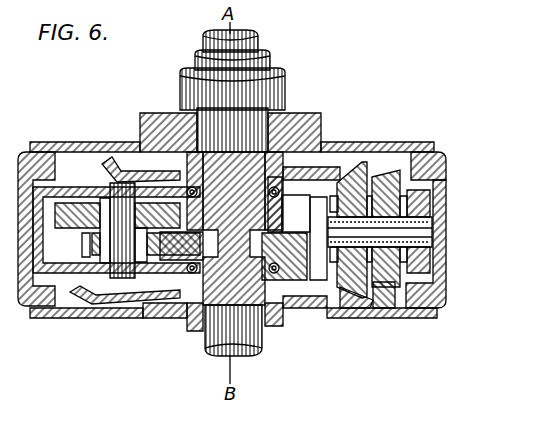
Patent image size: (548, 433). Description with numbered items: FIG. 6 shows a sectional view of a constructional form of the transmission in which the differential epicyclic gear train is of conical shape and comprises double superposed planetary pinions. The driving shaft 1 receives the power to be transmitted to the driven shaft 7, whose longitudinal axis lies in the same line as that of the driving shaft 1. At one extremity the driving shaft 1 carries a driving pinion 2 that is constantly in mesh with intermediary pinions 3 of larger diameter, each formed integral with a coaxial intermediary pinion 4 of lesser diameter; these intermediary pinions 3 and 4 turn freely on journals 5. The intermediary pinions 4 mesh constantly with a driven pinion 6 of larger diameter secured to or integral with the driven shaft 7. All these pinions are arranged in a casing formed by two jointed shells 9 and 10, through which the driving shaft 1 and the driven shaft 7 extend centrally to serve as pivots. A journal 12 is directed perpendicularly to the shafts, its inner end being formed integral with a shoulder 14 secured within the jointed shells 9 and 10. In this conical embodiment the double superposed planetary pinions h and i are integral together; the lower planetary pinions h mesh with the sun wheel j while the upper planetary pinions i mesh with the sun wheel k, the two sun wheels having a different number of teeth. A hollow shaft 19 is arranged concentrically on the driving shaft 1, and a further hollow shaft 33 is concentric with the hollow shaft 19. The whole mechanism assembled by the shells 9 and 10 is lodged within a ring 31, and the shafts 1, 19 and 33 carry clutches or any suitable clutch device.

The driving shaft 1 is at (176, 118).
The driving pinion 2 is at (290, 207).
The intermediary pinion 3 is at (66, 229).
The intermediary pinion 4 is at (82, 253).
The journal 5 is at (110, 160).
The driven pinion 6 is at (290, 236).
The driven shaft 7 is at (203, 338).
The shell 9 is at (432, 221).
The shell 10 is at (440, 284).
The journal 12 is at (415, 236).
The shoulder 14 is at (318, 247).
The hollow shaft 19 is at (278, 58).
The ring 31 is at (432, 170).
The hollow shaft 33 is at (286, 90).
The sun wheel j is at (338, 170).
The planetary pinion h is at (369, 172).
The planetary pinion i is at (388, 304).
The sun wheel k is at (358, 302).